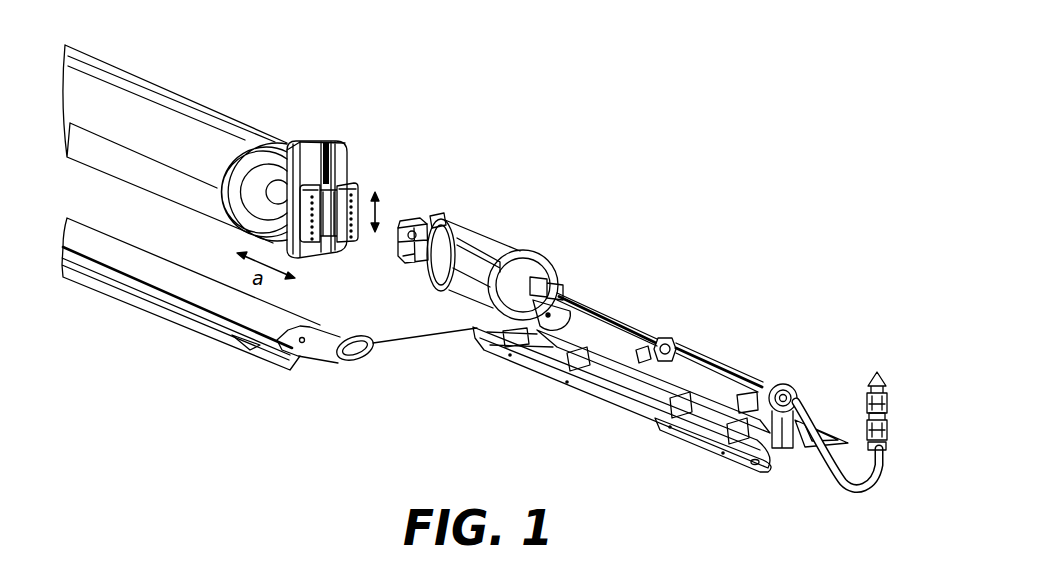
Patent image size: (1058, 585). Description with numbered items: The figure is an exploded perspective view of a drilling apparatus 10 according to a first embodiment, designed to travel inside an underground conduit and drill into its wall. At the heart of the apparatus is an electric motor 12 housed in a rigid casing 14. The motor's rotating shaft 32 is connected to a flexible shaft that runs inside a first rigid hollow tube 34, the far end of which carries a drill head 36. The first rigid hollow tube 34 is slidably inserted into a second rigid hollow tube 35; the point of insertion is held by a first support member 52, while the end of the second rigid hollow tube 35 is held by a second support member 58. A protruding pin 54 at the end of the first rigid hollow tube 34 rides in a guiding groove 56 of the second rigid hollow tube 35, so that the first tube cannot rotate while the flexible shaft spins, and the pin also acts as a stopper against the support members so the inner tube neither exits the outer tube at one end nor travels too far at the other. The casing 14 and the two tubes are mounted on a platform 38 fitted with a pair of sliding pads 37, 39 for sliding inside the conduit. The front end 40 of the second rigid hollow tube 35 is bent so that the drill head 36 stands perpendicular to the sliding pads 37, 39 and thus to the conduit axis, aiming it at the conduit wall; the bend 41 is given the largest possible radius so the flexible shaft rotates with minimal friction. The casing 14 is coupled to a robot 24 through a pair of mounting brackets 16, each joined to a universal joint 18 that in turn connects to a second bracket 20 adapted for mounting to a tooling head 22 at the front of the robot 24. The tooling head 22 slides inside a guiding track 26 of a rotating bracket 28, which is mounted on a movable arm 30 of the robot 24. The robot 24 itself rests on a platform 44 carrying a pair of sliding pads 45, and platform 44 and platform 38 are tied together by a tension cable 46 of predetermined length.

The drilling apparatus 10 is at (677, 180).
The electric motor 12 is at (490, 231).
The rigid casing 14 is at (452, 291).
The mounting brackets 16 is at (438, 213).
The universal joint 18 is at (408, 265).
The second bracket 20 is at (400, 228).
The tooling head 22 is at (350, 183).
The robot 24 is at (170, 87).
The guiding track 26 is at (315, 145).
The rotating bracket 28 is at (340, 148).
The movable arm 30 is at (257, 178).
The rotating shaft 32 is at (536, 270).
The first rigid hollow tube 34 is at (613, 327).
The second rigid hollow tube 35 is at (757, 378).
The drill head 36 is at (879, 374).
The sliding pad 37 is at (680, 433).
The platform 38 is at (600, 387).
The sliding pad 39 is at (667, 375).
The front end 40 is at (890, 420).
The bend 41 is at (831, 483).
The platform 44 is at (298, 353).
The sliding pads 45 is at (227, 303).
The tension cable 46 is at (413, 337).
The first support member 52 is at (656, 338).
The protruding pin 54 is at (700, 353).
The guiding groove 56 is at (730, 377).
The second support member 58 is at (794, 383).